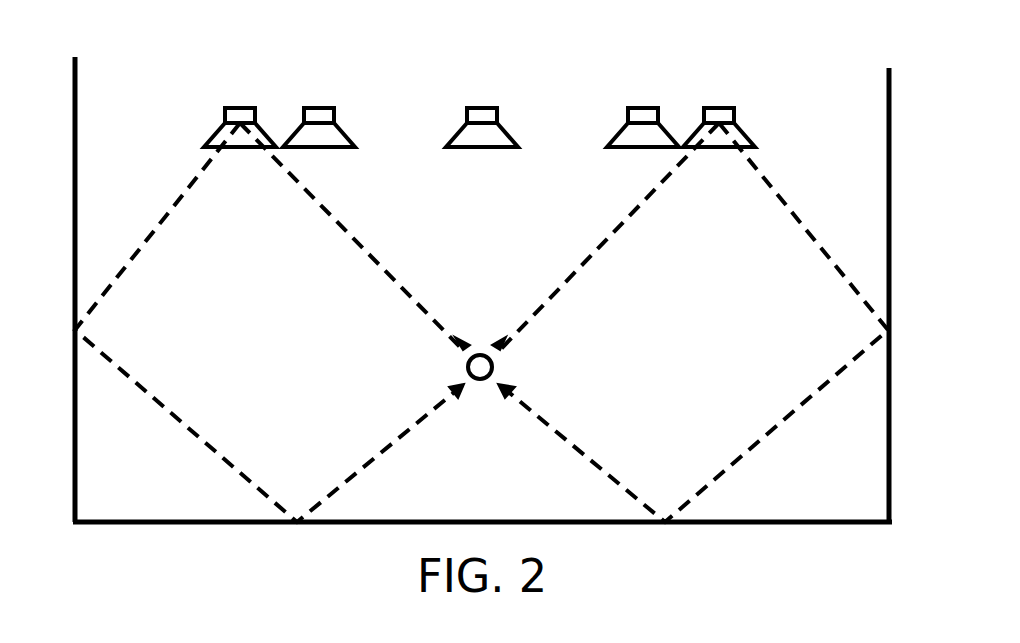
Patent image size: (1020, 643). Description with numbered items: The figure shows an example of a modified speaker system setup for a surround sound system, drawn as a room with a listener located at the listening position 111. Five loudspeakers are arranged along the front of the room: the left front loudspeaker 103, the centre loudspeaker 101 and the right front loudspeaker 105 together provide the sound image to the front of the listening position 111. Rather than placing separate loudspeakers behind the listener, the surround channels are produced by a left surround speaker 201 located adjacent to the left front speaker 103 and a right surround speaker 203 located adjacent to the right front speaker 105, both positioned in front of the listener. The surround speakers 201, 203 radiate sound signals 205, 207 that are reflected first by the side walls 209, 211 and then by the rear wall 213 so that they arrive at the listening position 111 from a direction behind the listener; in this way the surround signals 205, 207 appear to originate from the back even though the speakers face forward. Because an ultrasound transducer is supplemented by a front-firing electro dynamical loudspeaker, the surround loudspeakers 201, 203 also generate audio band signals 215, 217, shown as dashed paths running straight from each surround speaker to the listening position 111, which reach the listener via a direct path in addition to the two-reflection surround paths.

The centre loudspeaker 101 is at (483, 108).
The left front loudspeaker 103 is at (318, 108).
The right front loudspeaker 105 is at (642, 108).
The listening position 111 is at (494, 369).
The left surround speaker 201 is at (243, 108).
The right surround speaker 203 is at (718, 108).
The sound signal 205 is at (191, 429).
The sound signal 207 is at (781, 418).
The side wall 209 is at (77, 140).
The side wall 211 is at (887, 140).
The rear wall 213 is at (465, 519).
The audio band signal 215 is at (347, 236).
The audio band signal 217 is at (614, 236).